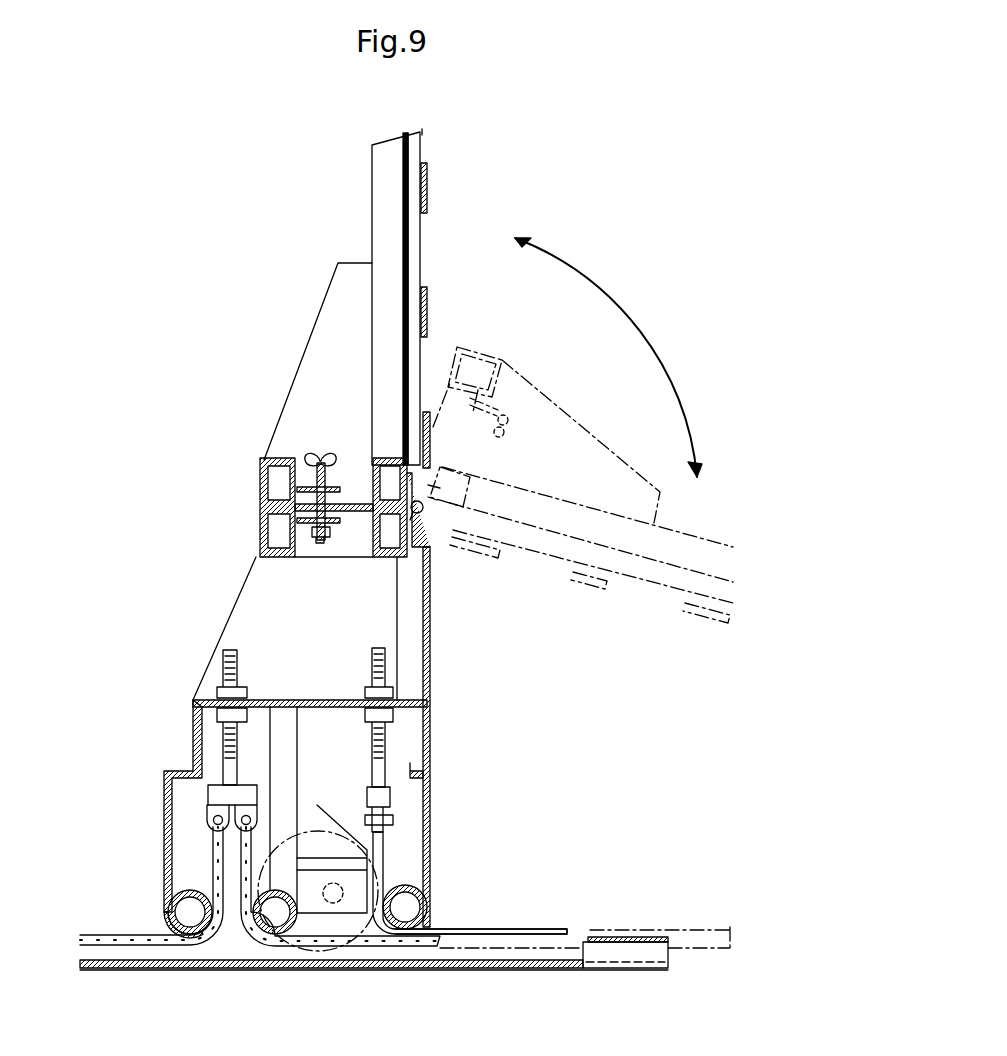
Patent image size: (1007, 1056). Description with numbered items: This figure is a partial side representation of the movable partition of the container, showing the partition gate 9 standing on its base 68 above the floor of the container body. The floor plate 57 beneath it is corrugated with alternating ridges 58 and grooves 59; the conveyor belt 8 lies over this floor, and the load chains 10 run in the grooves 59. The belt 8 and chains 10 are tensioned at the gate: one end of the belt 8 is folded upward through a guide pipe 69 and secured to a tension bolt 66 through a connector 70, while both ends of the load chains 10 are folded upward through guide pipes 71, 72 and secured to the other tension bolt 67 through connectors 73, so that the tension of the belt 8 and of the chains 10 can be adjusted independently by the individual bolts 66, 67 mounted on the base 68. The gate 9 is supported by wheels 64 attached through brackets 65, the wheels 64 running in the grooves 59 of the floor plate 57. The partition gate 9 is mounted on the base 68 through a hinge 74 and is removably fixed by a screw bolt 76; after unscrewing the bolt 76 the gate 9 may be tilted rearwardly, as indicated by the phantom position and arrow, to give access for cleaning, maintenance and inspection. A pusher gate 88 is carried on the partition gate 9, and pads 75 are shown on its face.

The partition gate 9 is at (385, 230).
The pusher gate 88 is at (415, 245).
The cushion pads 75 is at (428, 184).
The screw bolt 76 is at (340, 473).
The hinge 74 is at (421, 512).
The base 68 is at (432, 657).
The tension bolt 67 is at (237, 660).
The tension bolt 66 is at (370, 657).
The connectors 73 is at (208, 797).
The connector 70 is at (390, 796).
The brackets 65 is at (317, 813).
The wheels 64 is at (390, 860).
The guide pipe 72 is at (185, 887).
The guide pipe 71 is at (296, 940).
The guide pipe 69 is at (424, 896).
The load chains 10 is at (122, 933).
The conveyor belt 8 is at (553, 930).
The grooves 59 is at (482, 958).
The floor plate 57 is at (647, 965).
The ridges 58 is at (645, 937).